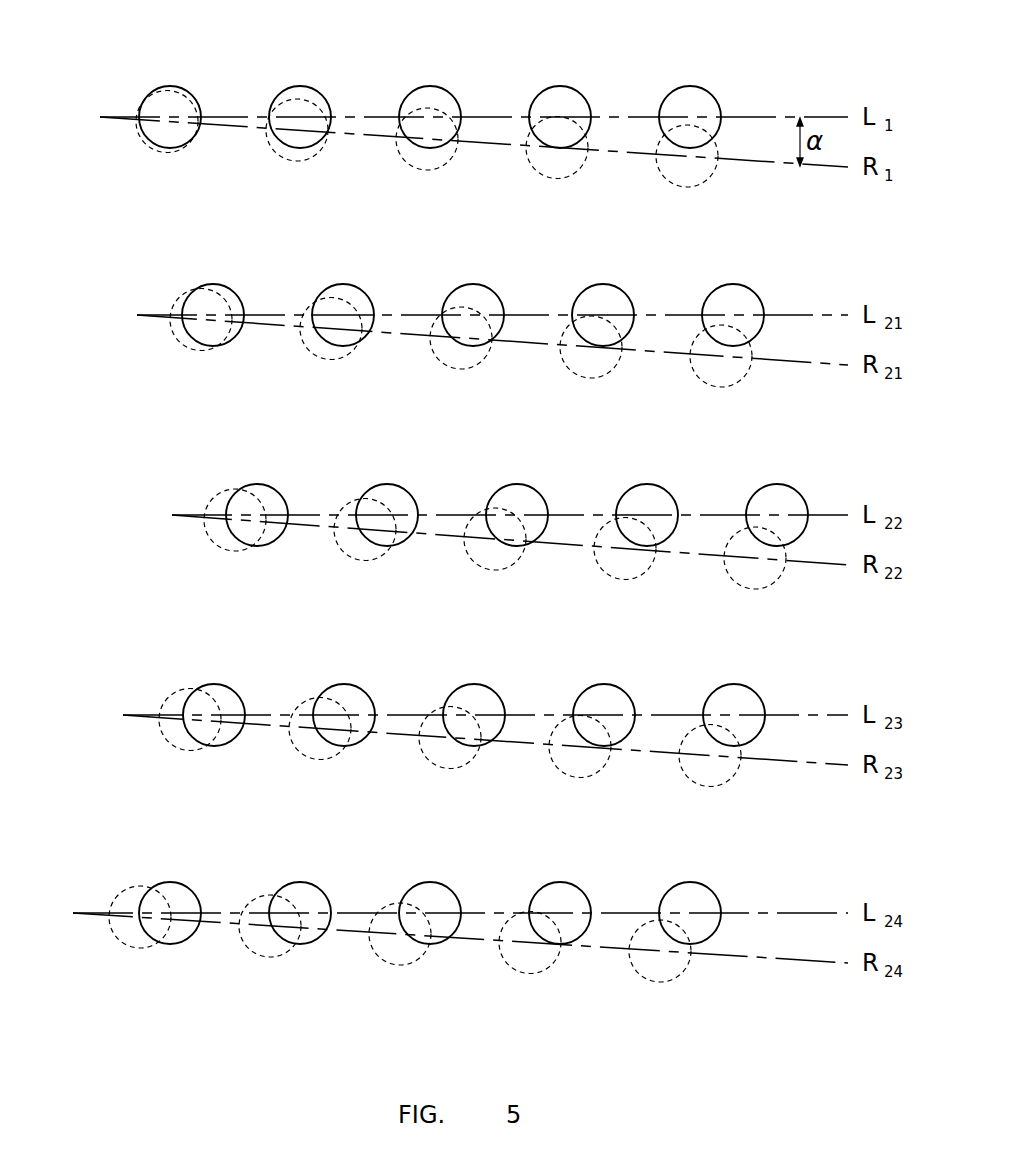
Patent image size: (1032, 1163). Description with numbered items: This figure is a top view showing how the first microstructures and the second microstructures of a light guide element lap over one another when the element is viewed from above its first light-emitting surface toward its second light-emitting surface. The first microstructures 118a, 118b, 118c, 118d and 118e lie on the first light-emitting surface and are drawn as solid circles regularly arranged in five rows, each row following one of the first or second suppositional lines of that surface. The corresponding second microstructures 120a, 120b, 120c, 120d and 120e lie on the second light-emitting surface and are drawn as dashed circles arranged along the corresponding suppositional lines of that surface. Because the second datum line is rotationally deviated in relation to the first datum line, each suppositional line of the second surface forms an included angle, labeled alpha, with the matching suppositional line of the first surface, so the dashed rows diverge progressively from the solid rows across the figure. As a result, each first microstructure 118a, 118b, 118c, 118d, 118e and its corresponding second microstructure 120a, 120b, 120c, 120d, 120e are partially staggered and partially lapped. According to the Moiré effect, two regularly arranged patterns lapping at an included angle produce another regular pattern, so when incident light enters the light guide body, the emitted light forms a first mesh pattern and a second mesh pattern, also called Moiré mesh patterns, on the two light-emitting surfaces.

The first microstructure 118a is at (180, 87).
The second microstructure 120a is at (179, 149).
The first microstructure 118b is at (223, 285).
The second microstructure 120b is at (706, 383).
The first microstructure 118c is at (267, 485).
The second microstructure 120c is at (740, 585).
The first microstructure 118d is at (224, 685).
The second microstructure 120d is at (695, 782).
The first microstructure 118e is at (180, 883).
The second microstructure 120e is at (645, 978).